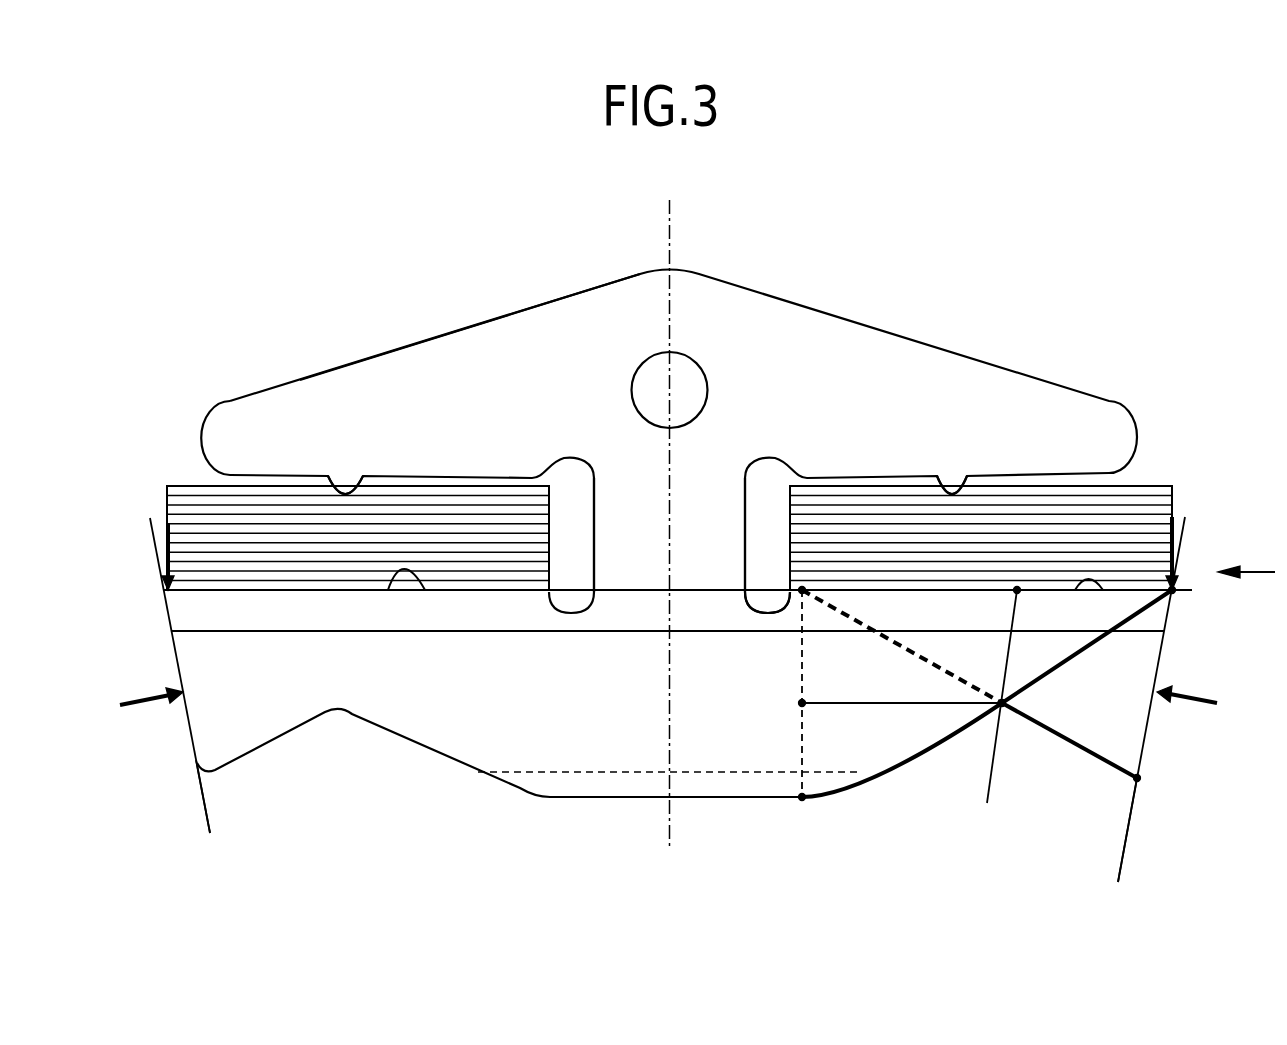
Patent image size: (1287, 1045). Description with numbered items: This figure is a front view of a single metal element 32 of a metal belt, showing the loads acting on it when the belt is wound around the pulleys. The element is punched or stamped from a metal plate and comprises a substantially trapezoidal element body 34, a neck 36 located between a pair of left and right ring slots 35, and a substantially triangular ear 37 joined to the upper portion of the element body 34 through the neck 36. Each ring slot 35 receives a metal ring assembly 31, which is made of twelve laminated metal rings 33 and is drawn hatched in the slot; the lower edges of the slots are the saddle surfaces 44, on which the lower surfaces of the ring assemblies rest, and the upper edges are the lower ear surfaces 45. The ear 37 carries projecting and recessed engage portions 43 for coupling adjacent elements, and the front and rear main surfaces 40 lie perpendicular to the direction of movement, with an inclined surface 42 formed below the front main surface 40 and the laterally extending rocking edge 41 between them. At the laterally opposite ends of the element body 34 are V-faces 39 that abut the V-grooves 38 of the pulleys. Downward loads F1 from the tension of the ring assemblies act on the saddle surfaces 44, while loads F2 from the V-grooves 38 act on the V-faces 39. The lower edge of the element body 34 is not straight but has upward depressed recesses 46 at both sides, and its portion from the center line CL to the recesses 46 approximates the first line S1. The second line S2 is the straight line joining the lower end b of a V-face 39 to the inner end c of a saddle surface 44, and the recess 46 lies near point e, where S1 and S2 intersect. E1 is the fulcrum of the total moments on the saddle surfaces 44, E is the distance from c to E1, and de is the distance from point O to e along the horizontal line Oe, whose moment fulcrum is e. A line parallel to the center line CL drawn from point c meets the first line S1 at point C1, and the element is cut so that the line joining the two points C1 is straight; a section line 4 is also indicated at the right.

The section line IV 4 is at (1270, 569).
The metal ring assembly 31 is at (188, 486).
The metal element 32 is at (886, 322).
The metal ring 33 is at (267, 530).
The element body 34 is at (452, 738).
The ring slot 35 is at (565, 518).
The neck 36 is at (717, 563).
The ear 37 is at (437, 365).
The V-groove 38 is at (207, 810).
The V-face 39 is at (192, 724).
The main surface 40 is at (714, 527).
The rocking edge 41 is at (497, 633).
The inclined surface 42 is at (727, 742).
The engage portion 43 is at (647, 362).
The saddle surface 44 is at (425, 590).
The lower ear surface 45 is at (357, 495).
The recess 46 is at (348, 714).
The center line CL is at (672, 253).
The downward load F1 is at (667, 553).
The pulley load F2 is at (675, 682).
The distance E is at (1015, 592).
The fulcrum E1 is at (1019, 592).
The first line S1 is at (838, 790).
The second line S2 is at (1080, 750).
The lower end of V-face b is at (1140, 779).
The inner end of saddle surface c is at (802, 590).
The point e is at (1008, 705).
The distance de is at (998, 700).
The point O is at (887, 701).
The point C1 is at (800, 800).